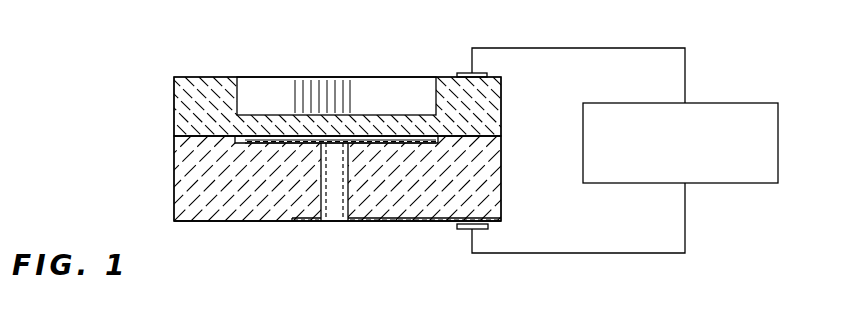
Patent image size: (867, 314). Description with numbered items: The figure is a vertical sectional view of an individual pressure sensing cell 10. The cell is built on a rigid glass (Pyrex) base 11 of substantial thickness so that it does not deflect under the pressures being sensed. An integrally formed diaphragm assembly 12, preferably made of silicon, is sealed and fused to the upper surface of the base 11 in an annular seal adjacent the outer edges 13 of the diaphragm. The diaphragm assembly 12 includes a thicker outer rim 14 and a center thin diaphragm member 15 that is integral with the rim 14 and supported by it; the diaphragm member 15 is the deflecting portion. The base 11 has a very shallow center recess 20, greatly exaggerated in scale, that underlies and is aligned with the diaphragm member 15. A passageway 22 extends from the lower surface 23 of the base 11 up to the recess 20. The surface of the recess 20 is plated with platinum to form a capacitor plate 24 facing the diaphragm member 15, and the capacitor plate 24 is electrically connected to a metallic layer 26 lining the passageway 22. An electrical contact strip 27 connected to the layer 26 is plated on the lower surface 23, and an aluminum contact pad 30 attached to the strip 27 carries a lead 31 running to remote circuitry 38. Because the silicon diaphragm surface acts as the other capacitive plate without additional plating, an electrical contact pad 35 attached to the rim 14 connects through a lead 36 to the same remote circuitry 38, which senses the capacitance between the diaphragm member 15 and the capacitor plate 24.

The pressure sensing cell 10 is at (165, 119).
The base 11 is at (193, 192).
The diaphragm assembly 12 is at (237, 72).
The outer edges 13 is at (205, 137).
The outer rim 14 is at (498, 97).
The diaphragm member 15 is at (331, 117).
The center recess 20 is at (440, 143).
The passageway 22 is at (333, 205).
The lower surface 23 is at (242, 222).
The capacitor plate 24 is at (270, 139).
The metallic layer 26 is at (340, 210).
The electrical contact strip 27 is at (414, 223).
The contact pad 30 is at (485, 231).
The lead 31 is at (620, 253).
The electrical contact pad 35 is at (460, 73).
The lead 36 is at (595, 48).
The remote circuitry 38 is at (760, 103).